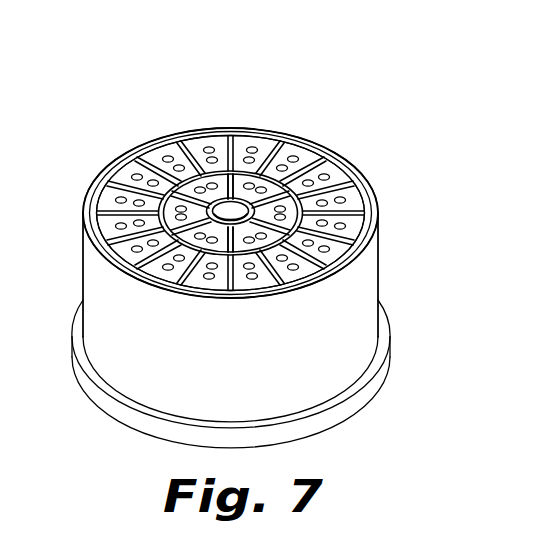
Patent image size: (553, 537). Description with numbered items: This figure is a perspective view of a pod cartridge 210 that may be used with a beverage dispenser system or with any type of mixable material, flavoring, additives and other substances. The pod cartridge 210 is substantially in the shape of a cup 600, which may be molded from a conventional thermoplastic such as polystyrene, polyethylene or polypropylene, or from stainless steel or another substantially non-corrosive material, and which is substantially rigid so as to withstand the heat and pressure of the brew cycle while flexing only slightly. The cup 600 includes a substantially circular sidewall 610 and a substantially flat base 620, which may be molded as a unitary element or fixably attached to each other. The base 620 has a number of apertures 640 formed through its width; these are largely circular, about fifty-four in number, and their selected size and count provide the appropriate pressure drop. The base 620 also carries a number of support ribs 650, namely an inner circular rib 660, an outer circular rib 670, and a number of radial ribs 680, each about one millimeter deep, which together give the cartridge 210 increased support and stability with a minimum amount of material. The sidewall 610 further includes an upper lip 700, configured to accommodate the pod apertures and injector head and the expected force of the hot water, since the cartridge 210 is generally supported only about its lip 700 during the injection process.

The pod cartridge 210 is at (146, 100).
The cup 600 is at (385, 232).
The sidewall 610 is at (382, 283).
The base 620 is at (320, 147).
The apertures 640 is at (282, 163).
The support ribs 650 is at (88, 195).
The inner circular rib 660 is at (158, 141).
The outer circular rib 670 is at (212, 168).
The radial ribs 680 is at (238, 167).
The upper lip 700 is at (388, 373).